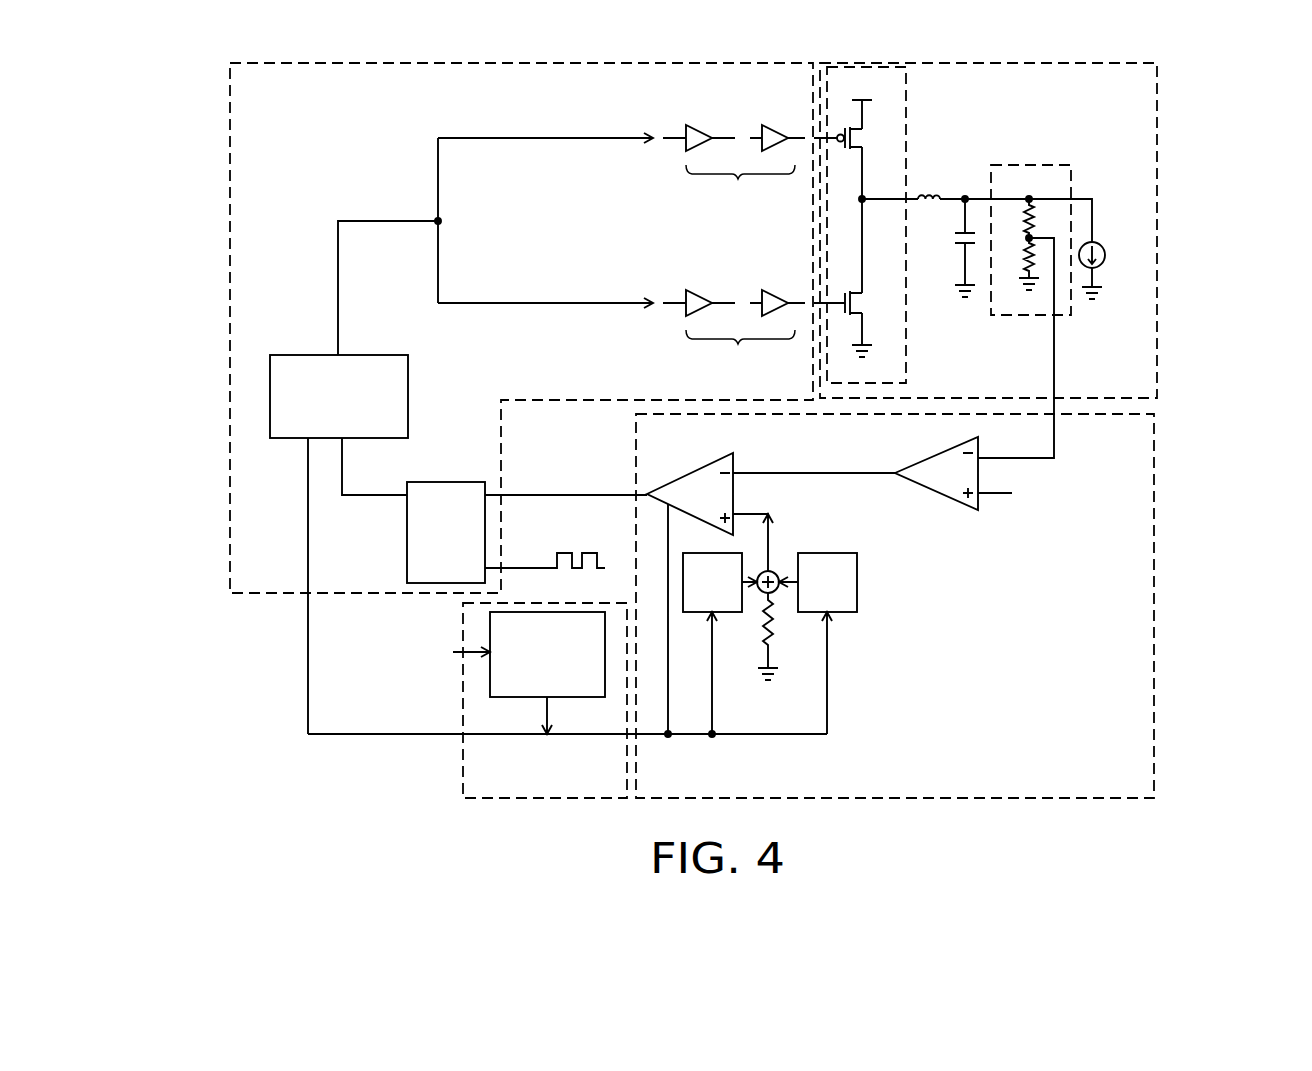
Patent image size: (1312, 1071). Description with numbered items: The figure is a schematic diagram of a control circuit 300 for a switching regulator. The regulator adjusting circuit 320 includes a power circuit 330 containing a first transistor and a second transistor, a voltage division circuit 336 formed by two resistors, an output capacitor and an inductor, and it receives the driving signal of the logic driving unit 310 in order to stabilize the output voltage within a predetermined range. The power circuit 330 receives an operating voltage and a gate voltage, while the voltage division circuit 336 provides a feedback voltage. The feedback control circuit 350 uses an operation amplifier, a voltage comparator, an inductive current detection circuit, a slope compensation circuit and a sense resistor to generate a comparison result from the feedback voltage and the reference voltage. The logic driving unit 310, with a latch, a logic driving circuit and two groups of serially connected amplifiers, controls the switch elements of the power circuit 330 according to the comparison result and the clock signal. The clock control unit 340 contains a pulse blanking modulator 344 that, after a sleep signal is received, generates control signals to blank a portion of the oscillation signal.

The control circuit 300 is at (1311, 775).
The logic driving unit 310 is at (230, 128).
The regulator adjusting circuit 320 is at (1157, 86).
The power circuit 330 is at (906, 87).
The voltage division circuit 336 is at (1047, 165).
The clock control unit 340 is at (463, 771).
The pulse blanking modulator 344 is at (490, 685).
The feedback control circuit 350 is at (1157, 458).